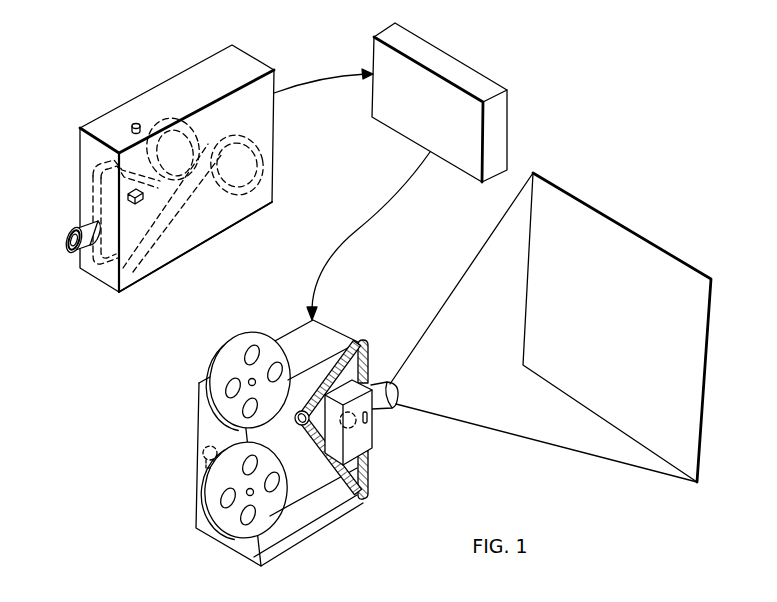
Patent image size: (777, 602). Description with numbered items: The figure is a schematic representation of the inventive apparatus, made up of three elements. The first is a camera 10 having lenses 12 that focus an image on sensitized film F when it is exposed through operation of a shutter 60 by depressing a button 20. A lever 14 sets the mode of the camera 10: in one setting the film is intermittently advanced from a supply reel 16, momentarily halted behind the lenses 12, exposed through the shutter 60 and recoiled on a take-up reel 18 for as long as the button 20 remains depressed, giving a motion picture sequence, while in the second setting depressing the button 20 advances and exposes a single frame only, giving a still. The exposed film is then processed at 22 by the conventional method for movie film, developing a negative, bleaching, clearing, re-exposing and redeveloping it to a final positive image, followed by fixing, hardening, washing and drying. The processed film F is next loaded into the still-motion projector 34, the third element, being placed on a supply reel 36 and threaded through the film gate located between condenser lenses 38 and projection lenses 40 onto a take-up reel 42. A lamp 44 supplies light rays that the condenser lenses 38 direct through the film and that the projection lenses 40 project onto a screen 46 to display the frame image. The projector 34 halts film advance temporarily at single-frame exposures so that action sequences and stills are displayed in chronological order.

The camera 10 is at (200, 242).
The lenses 12 is at (65, 234).
The lever 14 is at (143, 197).
The supply reel 16 is at (200, 144).
The take-up reel 18 is at (262, 163).
The button 20 is at (133, 126).
The film processing 22 is at (485, 77).
The still-motion projector 34 is at (199, 424).
The supply reel 36 is at (218, 363).
The condenser lenses 38 is at (357, 432).
The projection lenses 40 is at (396, 404).
The take-up reel 42 is at (217, 534).
The lamp 44 is at (201, 456).
The screen 46 is at (617, 387).
The shutter 60 is at (137, 242).
The film F is at (370, 343).